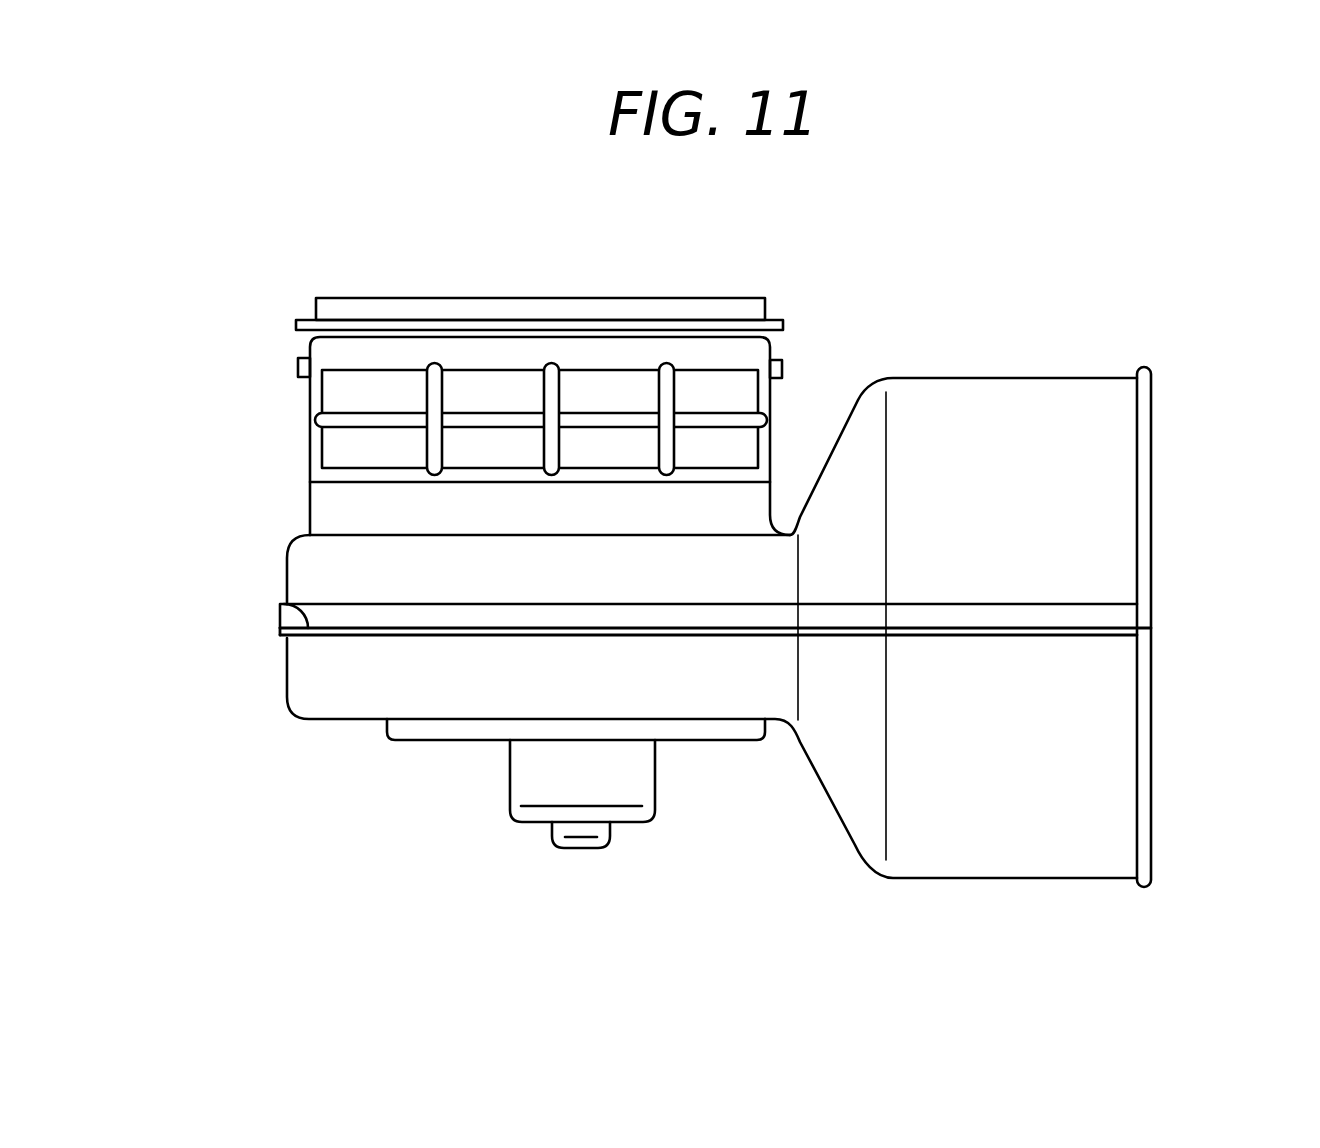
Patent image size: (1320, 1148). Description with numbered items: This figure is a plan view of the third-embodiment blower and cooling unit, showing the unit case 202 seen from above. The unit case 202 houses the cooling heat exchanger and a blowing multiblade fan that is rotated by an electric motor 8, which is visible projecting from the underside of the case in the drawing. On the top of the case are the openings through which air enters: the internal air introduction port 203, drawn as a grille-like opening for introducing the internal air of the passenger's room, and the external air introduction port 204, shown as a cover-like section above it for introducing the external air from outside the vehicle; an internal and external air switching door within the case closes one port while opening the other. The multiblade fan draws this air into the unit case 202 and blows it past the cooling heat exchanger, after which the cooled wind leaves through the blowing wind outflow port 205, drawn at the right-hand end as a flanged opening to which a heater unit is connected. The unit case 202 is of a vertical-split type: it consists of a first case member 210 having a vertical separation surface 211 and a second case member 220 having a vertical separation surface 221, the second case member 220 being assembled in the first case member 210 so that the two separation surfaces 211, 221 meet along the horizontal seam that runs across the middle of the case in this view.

The electric motor 8 is at (650, 783).
The unit case 202 is at (951, 626).
The internal air introduction port 203 is at (598, 368).
The external air introduction port 204 is at (540, 298).
The blowing wind outflow port 205 is at (1152, 565).
The first case member 210 is at (990, 385).
The vertical separation surface 211 is at (634, 606).
The second case member 220 is at (1022, 865).
The vertical separation surface 221 is at (715, 631).